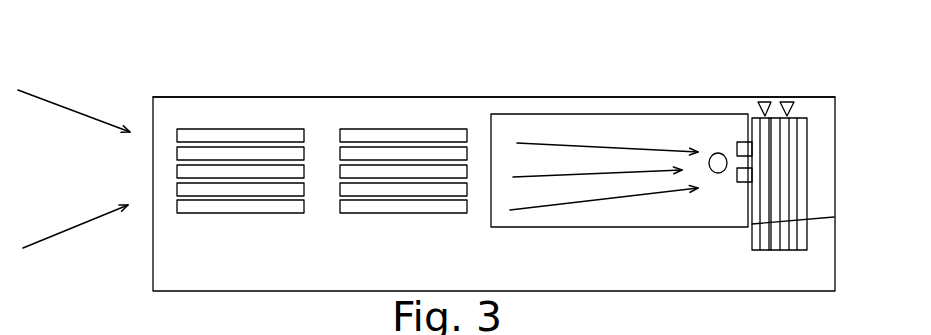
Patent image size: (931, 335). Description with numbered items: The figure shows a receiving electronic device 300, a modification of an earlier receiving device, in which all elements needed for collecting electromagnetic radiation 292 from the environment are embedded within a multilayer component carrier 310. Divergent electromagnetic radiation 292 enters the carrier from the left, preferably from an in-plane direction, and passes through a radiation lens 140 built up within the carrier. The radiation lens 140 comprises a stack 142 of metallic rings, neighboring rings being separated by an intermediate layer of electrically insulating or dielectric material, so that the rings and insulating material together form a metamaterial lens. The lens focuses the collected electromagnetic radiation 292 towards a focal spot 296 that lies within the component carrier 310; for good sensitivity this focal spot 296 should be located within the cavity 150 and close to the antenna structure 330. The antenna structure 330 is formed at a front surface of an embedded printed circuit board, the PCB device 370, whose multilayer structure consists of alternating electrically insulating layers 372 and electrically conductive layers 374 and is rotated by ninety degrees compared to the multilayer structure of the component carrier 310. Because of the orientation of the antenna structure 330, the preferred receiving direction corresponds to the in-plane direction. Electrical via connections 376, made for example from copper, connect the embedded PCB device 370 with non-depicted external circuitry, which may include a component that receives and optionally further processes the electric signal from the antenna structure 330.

The receiving electronic device 300 is at (856, 88).
The multilayer component carrier 310 is at (625, 97).
The electromagnetic radiation 292 is at (67, 107).
The radiation lens 140 is at (322, 160).
The stack of metallic rings 142 is at (232, 127).
The cavity 150 is at (505, 122).
The focal spot 296 is at (717, 153).
The antenna structure 330 is at (737, 177).
The PCB device 370 is at (822, 203).
The electrically insulating layers 372 is at (756, 165).
The electrically conductive layers 374 is at (765, 232).
The electrical via connections 376 is at (787, 100).